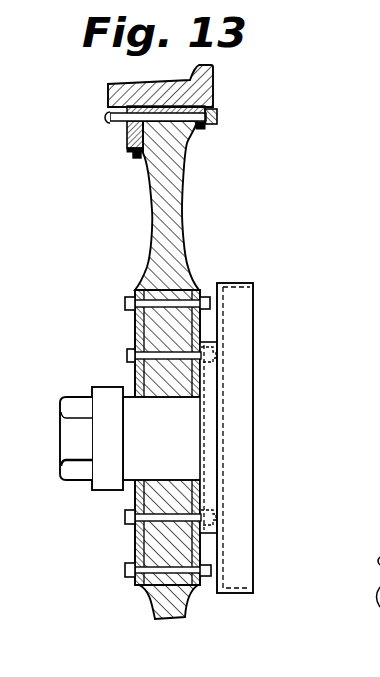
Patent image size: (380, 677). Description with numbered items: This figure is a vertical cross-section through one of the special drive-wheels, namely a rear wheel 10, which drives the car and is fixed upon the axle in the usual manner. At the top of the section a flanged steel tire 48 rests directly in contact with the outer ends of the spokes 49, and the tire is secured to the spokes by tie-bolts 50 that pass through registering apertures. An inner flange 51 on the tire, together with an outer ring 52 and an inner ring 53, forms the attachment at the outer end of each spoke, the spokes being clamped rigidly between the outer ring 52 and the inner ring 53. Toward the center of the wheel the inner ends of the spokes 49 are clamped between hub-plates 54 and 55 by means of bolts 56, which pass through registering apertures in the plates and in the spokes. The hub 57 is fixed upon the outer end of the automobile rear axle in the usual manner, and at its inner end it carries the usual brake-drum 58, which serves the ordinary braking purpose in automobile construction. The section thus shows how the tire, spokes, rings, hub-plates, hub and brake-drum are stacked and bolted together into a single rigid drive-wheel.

The rear wheel 10 is at (183, 168).
The flanged steel tire 48 is at (207, 89).
The spokes 49 is at (172, 225).
The tie-bolts 50 is at (212, 114).
The inner flange 51 is at (122, 128).
The outer ring 52 is at (137, 159).
The inner ring 53 is at (216, 128).
The hub-plate 54 is at (138, 290).
The hub-plate 55 is at (203, 288).
The bolts 56 is at (127, 354).
The hub 57 is at (130, 438).
The brake-drum 58 is at (241, 363).